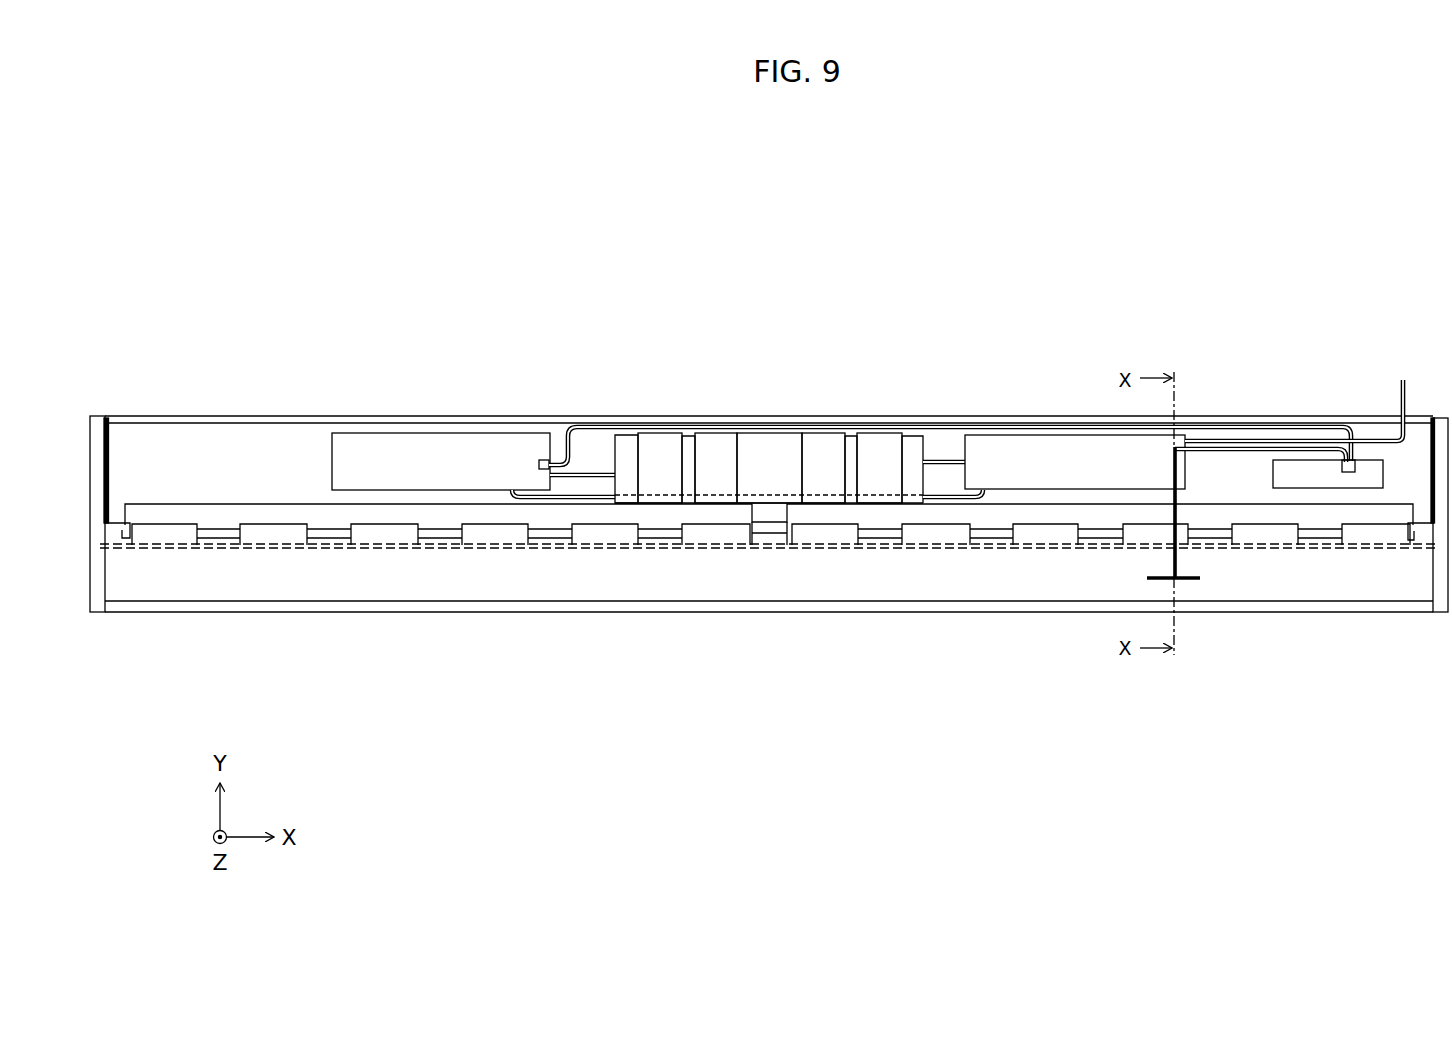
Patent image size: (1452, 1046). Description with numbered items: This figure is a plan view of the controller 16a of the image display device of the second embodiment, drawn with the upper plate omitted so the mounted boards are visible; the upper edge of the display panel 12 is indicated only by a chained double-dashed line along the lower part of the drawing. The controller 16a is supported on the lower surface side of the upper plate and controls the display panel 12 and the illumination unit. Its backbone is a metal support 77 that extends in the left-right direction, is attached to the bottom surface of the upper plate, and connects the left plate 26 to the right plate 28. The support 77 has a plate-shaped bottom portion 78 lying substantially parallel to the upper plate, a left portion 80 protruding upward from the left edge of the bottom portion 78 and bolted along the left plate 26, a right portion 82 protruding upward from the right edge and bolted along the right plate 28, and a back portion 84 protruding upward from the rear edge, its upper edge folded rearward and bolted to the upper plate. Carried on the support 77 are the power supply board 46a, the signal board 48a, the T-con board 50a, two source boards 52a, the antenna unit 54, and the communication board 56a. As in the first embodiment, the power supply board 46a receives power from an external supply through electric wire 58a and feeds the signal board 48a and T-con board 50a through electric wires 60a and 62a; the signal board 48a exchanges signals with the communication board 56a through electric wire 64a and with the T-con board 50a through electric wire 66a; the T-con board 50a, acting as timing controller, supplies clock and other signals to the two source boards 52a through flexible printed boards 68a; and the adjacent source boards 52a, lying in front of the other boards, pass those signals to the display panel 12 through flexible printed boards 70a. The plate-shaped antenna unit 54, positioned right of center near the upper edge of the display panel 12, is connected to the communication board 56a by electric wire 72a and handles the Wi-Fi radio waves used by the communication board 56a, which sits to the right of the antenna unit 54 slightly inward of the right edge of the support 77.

The display panel 12 is at (771, 549).
The controller 16a is at (769, 425).
The left plate 26 is at (98, 595).
The right plate 28 is at (1442, 588).
The power supply board 46a is at (1053, 457).
The signal board 48a is at (445, 457).
The T-con board 50a is at (771, 462).
The source boards 52a is at (438, 517).
The antenna unit 54 is at (1188, 582).
The communication board 56a is at (1310, 476).
The connector pin 58a is at (1401, 403).
The flexible cable 60a is at (972, 498).
The flexible cable 62a is at (945, 450).
The flexible cable 64a is at (559, 458).
The flexible cable 66a is at (604, 472).
The battery cell 68a is at (717, 452).
The electronic component 70a is at (602, 534).
The electric wire 72a is at (1178, 562).
The support 77 is at (497, 414).
The bottom portion 78 is at (264, 446).
The left portion 80 is at (111, 466).
The right portion 82 is at (1423, 458).
The back portion 84 is at (325, 422).